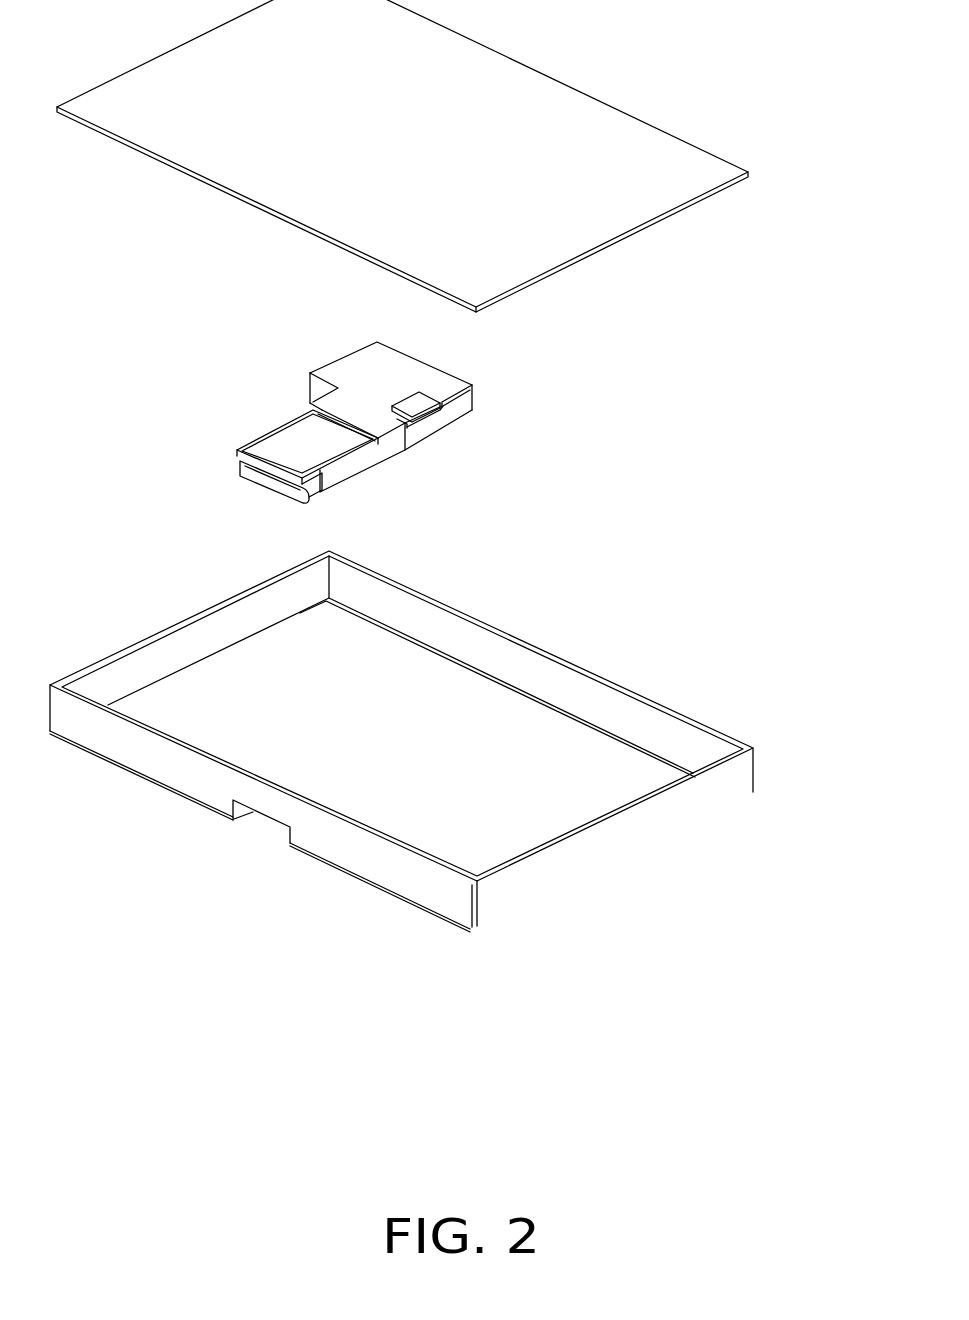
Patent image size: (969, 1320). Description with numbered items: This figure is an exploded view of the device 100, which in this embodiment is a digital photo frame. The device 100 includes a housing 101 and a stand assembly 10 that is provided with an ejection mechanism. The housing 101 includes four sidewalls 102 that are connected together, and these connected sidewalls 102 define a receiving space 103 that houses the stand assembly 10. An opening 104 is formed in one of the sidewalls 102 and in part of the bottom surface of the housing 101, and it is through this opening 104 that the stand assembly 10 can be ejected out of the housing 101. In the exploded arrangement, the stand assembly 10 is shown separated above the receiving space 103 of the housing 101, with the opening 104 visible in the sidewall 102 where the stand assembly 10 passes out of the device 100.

The device 100 is at (683, 67).
The stand assembly 10 is at (443, 423).
The housing 101 is at (428, 888).
The sidewalls 102 is at (595, 673).
The receiving space 103 is at (600, 765).
The opening 104 is at (265, 828).